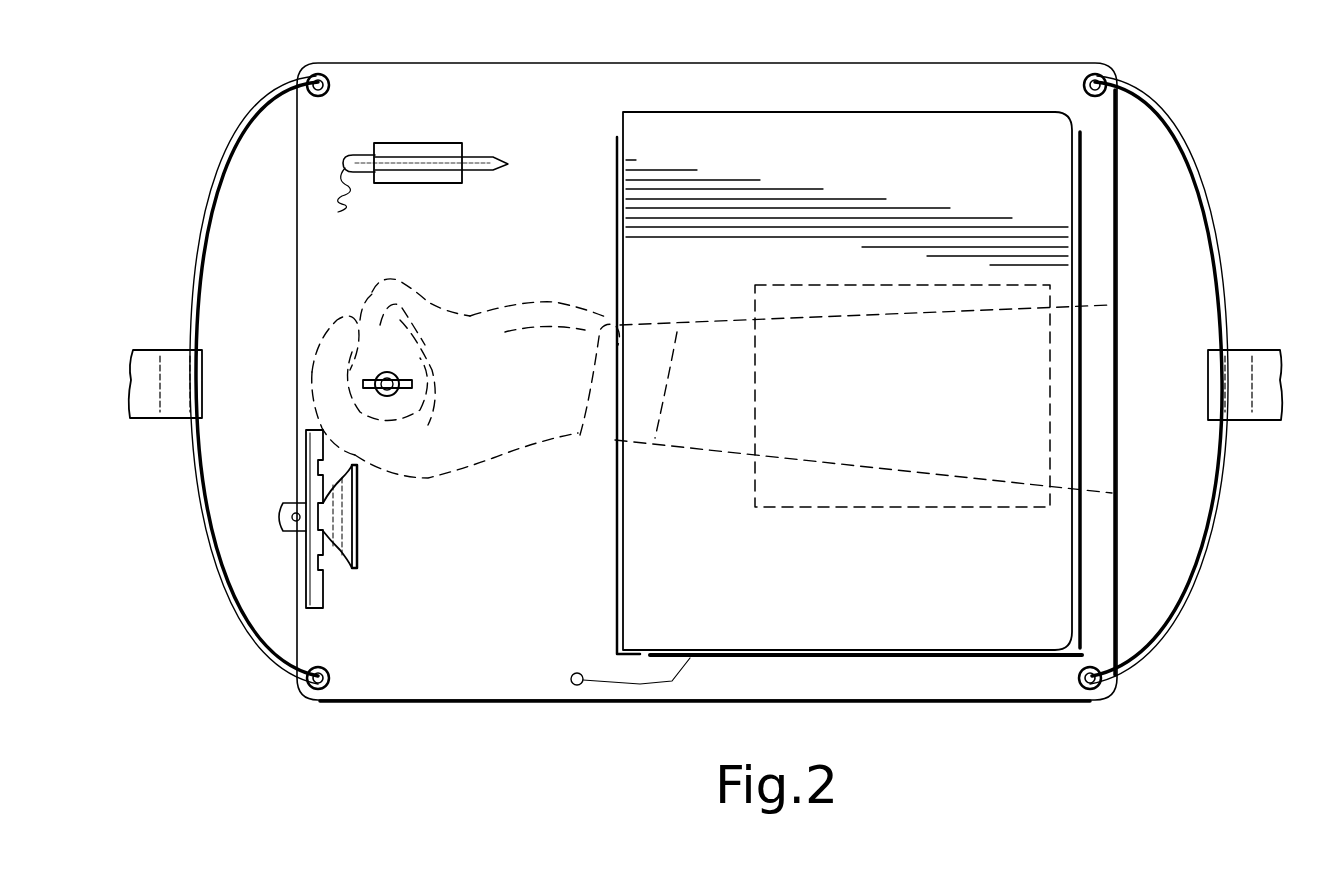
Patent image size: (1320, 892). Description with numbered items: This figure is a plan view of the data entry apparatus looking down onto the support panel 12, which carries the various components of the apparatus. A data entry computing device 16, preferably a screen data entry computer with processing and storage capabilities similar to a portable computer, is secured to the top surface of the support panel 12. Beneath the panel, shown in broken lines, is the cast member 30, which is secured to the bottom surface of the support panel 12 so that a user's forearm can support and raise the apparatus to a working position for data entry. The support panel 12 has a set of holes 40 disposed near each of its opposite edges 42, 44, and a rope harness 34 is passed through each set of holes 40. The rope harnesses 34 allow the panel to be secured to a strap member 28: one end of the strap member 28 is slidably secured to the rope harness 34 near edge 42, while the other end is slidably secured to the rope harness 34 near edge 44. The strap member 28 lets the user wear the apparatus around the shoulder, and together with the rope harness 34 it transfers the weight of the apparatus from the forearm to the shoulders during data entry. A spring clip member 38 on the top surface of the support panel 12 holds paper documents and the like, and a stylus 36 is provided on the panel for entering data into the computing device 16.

The support panel 12 is at (912, 688).
The data entry computing device 16 is at (980, 128).
The strap member 28 is at (148, 408).
The cast member 30 is at (752, 496).
The rope harness 34 is at (208, 203).
The stylus 36 is at (418, 183).
The spring clip member 38 is at (345, 523).
The holes 40 is at (1100, 72).
The edge 42 is at (295, 320).
The edge 44 is at (1102, 363).